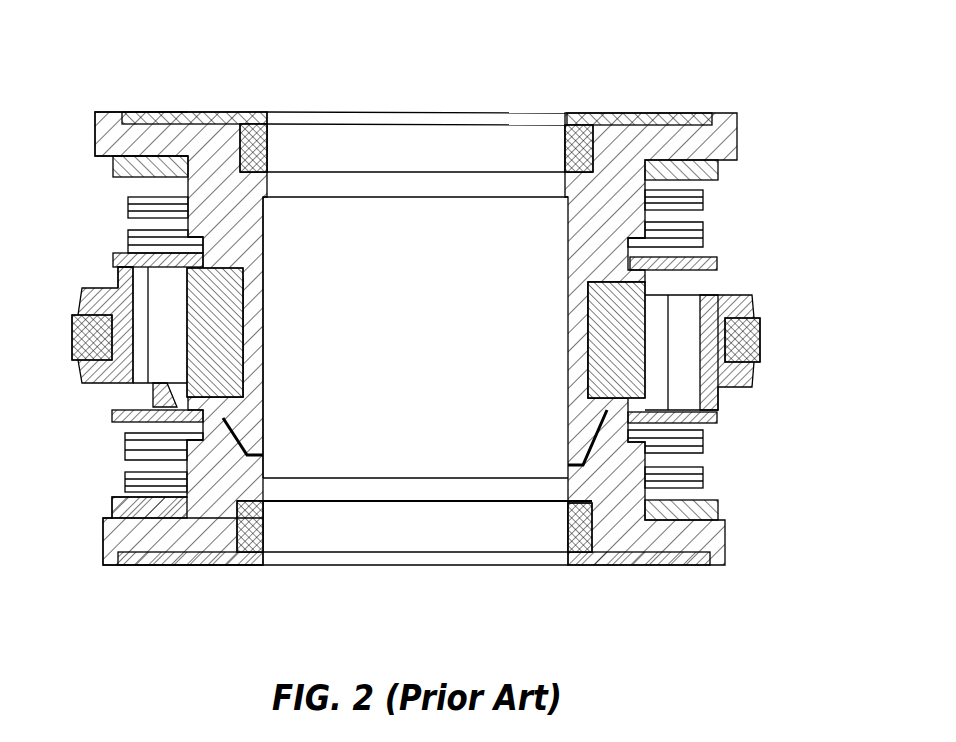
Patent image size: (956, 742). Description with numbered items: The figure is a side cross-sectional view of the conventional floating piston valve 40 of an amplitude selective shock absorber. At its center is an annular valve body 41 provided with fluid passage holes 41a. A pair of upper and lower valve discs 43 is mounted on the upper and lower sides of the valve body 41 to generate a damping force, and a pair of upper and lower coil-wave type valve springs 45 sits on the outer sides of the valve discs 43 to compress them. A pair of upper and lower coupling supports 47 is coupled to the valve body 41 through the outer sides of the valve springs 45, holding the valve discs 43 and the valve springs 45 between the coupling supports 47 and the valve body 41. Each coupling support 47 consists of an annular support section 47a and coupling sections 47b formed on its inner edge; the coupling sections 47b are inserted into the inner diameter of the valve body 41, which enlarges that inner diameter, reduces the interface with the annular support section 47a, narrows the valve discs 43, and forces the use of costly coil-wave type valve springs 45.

The floating piston valve 40 is at (453, 323).
The annular valve body 41 is at (752, 300).
The fluid passage holes 41a is at (678, 398).
The valve discs 43 is at (717, 263).
The coil-wave type valve springs 45 is at (711, 190).
The coupling supports 47 is at (740, 138).
The annular support section 47a is at (98, 135).
The coupling sections 47b is at (257, 340).